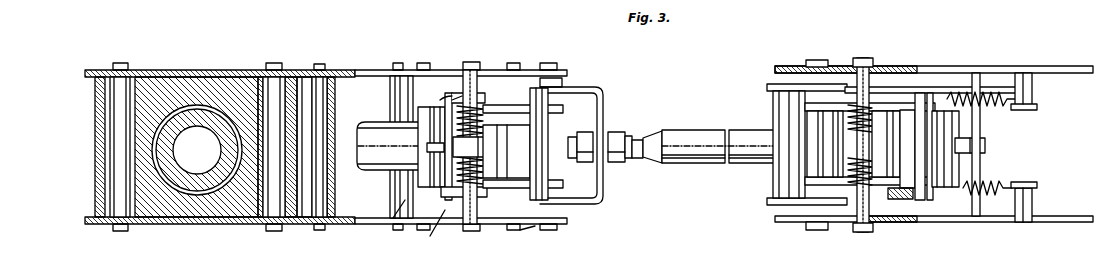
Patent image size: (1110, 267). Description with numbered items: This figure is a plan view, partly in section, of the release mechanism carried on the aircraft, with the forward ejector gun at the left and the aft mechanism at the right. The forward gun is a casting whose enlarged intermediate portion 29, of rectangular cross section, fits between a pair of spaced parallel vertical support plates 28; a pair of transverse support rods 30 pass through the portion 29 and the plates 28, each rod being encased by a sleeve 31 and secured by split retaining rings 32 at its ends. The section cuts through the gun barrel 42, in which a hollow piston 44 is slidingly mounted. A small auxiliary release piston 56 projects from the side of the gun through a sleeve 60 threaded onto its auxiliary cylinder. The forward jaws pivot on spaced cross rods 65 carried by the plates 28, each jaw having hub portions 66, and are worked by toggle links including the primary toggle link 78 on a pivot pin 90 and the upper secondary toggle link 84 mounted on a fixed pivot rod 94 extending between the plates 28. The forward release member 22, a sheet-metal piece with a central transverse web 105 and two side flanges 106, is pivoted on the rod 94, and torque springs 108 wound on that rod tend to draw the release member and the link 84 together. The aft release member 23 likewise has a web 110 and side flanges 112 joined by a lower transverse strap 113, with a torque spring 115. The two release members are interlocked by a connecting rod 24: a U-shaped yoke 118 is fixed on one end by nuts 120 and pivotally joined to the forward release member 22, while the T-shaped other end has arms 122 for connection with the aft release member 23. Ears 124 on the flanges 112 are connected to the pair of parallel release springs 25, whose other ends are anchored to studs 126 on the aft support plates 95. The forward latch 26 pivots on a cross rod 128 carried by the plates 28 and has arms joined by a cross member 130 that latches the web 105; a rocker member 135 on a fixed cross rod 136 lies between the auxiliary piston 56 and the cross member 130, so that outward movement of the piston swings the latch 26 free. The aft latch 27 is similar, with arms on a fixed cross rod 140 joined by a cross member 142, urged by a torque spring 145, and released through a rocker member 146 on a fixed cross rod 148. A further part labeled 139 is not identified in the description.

The forward release member 22 is at (454, 96).
The aft release member 23 is at (883, 110).
The connecting rod 24 is at (693, 130).
The release springs 25 is at (990, 92).
The forward latch 26 is at (562, 110).
The aft latch 27 is at (943, 190).
The support plates 28 is at (352, 70).
The intermediate portion 29 is at (212, 213).
The transverse support rods 30 is at (282, 70).
The sleeve 31 is at (100, 148).
The split retaining rings 32 is at (133, 68).
The gun barrel 42 is at (232, 143).
The hollow piston 44 is at (197, 150).
The auxiliary release piston 56 is at (428, 146).
The sleeve 60 is at (358, 130).
The cross rods 65 is at (458, 106).
The hub portions 66 is at (412, 84).
The primary toggle link 78 is at (537, 88).
The upper secondary toggle link 84 is at (486, 146).
The pivot pin 90 is at (512, 165).
The fixed pivot rod 94 is at (470, 64).
The aft support plates 95 is at (1028, 66).
The central transverse web 105 is at (438, 200).
The side flanges 106 is at (492, 105).
The torque springs 108 is at (448, 98).
The central transverse web 110 is at (840, 162).
The side flanges 112 is at (857, 90).
The lower transverse strap 113 is at (920, 202).
The torque spring 115 is at (870, 104).
The U-shaped yoke 118 is at (598, 206).
The nuts 120 is at (600, 132).
The arms 122 is at (768, 88).
The ears 124 is at (930, 110).
The studs 126 is at (1033, 94).
The cross rod 128 is at (545, 233).
The cross member 130 is at (425, 112).
The rocker member 135 is at (443, 170).
The fixed cross rod 136 is at (400, 232).
The bar 139 is at (563, 82).
The fixed cross rod 140 is at (815, 224).
The cross member 142 is at (960, 164).
The torque spring 145 is at (814, 62).
The rocker member 146 is at (985, 146).
The fixed cross rod 148 is at (975, 218).